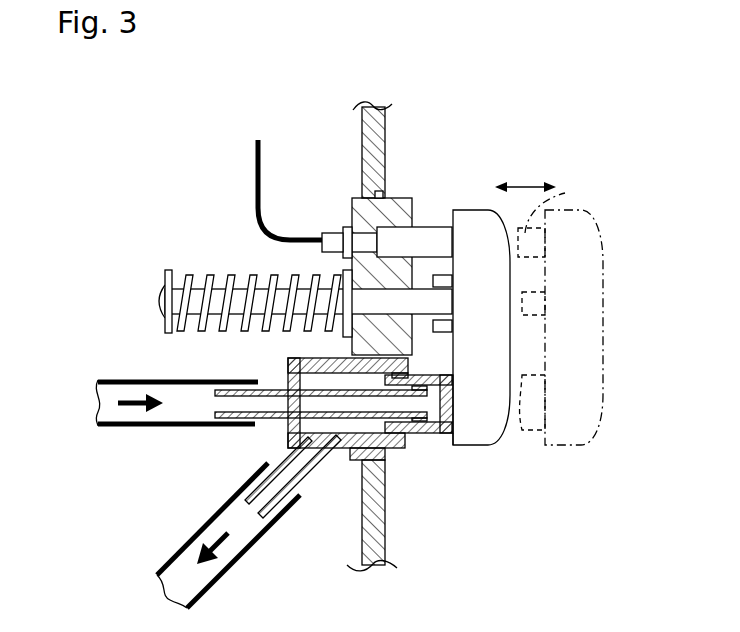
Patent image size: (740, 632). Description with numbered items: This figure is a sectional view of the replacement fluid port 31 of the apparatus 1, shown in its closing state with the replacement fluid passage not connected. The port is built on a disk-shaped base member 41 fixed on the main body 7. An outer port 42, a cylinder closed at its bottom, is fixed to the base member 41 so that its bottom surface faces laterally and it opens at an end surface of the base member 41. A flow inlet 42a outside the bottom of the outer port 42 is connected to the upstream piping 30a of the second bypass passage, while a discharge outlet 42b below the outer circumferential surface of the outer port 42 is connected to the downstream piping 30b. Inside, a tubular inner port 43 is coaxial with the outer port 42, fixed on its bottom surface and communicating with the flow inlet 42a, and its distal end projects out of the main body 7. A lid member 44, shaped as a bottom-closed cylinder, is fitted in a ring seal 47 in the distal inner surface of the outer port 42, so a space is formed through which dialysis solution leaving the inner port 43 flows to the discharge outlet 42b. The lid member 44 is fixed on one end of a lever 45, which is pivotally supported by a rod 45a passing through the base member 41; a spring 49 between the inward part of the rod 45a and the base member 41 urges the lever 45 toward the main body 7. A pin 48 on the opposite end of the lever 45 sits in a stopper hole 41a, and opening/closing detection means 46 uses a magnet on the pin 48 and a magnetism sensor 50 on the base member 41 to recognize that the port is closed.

The valve device 1 is at (434, 73).
The main body 7 is at (388, 130).
The replacement fluid port 31 is at (416, 222).
The base member 41 is at (416, 193).
The stopper hole 41a is at (434, 241).
The outer port 42 is at (288, 362).
The flow inlet 42a is at (267, 423).
The discharge outlet 42b is at (317, 467).
The inner port 43 is at (429, 434).
The lid member 44 is at (443, 446).
The lever 45 is at (510, 268).
The rod 45a is at (372, 298).
The opening/closing detection means 46 is at (338, 224).
The ring seal 47 is at (400, 461).
The pin 48 is at (602, 189).
The spring 49 is at (200, 278).
The magnetism sensor 50 is at (322, 238).
The upstream piping 30a is at (113, 381).
The downstream piping 30b is at (215, 583).